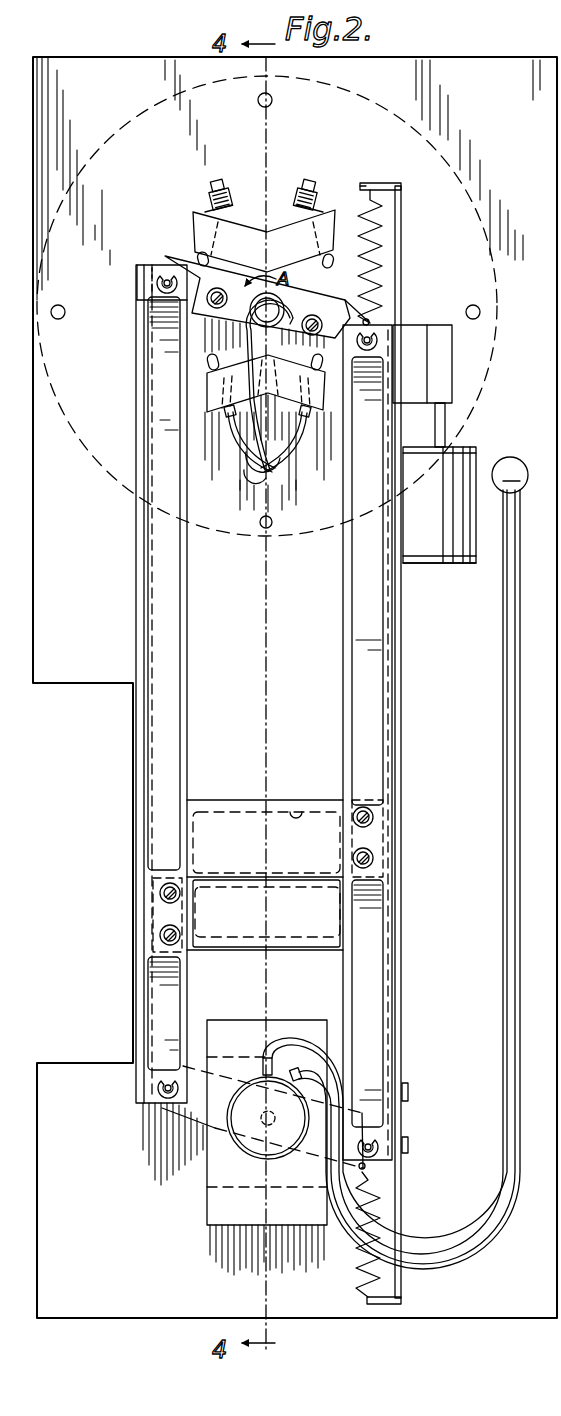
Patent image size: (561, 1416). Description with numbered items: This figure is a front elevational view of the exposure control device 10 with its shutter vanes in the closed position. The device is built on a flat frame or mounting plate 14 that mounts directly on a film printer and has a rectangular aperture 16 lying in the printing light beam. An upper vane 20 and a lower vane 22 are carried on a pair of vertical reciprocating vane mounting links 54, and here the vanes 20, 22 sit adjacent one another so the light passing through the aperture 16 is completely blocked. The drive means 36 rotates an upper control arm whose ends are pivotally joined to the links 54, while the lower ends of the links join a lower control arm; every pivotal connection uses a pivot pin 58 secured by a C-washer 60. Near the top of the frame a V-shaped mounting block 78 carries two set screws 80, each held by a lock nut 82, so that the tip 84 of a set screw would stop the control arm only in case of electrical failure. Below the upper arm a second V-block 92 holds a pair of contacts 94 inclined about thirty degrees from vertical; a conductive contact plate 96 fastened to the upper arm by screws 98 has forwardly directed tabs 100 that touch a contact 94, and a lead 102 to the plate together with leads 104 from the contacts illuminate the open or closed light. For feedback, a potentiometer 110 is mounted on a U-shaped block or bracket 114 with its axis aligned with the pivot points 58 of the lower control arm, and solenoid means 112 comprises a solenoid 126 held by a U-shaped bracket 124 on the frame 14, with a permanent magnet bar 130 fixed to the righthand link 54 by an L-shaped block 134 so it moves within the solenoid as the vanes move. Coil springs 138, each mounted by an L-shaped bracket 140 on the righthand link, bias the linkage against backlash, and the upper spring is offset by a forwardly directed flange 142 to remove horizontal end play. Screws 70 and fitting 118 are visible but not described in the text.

The exposure control device 10 is at (430, 52).
The frame or mounting plate 14 is at (493, 70).
The rectangular aperture 16 is at (297, 808).
The upper vane 20 is at (252, 850).
The lower vane 22 is at (252, 922).
The drive means 36 is at (167, 233).
The vane mounting link 54 is at (152, 616).
The pivot pin 58 is at (158, 290).
The C-washer 60 is at (156, 282).
The screw 70 is at (160, 893).
The V-shaped mounting block 78 is at (264, 241).
The set screw 80 is at (224, 195).
The lock nut 82 is at (300, 216).
The tip 84 is at (203, 252).
The V-block 92 is at (268, 433).
The contact 94 is at (230, 416).
The conductive contact plate 96 is at (236, 292).
The screw 98 is at (312, 313).
The tab 100 is at (322, 322).
The lead 102 is at (247, 343).
The lead 104 is at (243, 466).
The potentiometer 110 is at (232, 1148).
The solenoid means 112 is at (488, 456).
The U-shaped block or bracket 114 is at (280, 1213).
The fitting 118 is at (515, 470).
The U-shaped bracket 124 is at (432, 565).
The solenoid 126 is at (439, 505).
The permanent magnet bar 130 is at (445, 427).
The L-shaped block 134 is at (440, 350).
The coil spring 138 is at (382, 270).
The L-shaped bracket 140 is at (402, 258).
The forwardly directed flange 142 is at (368, 183).